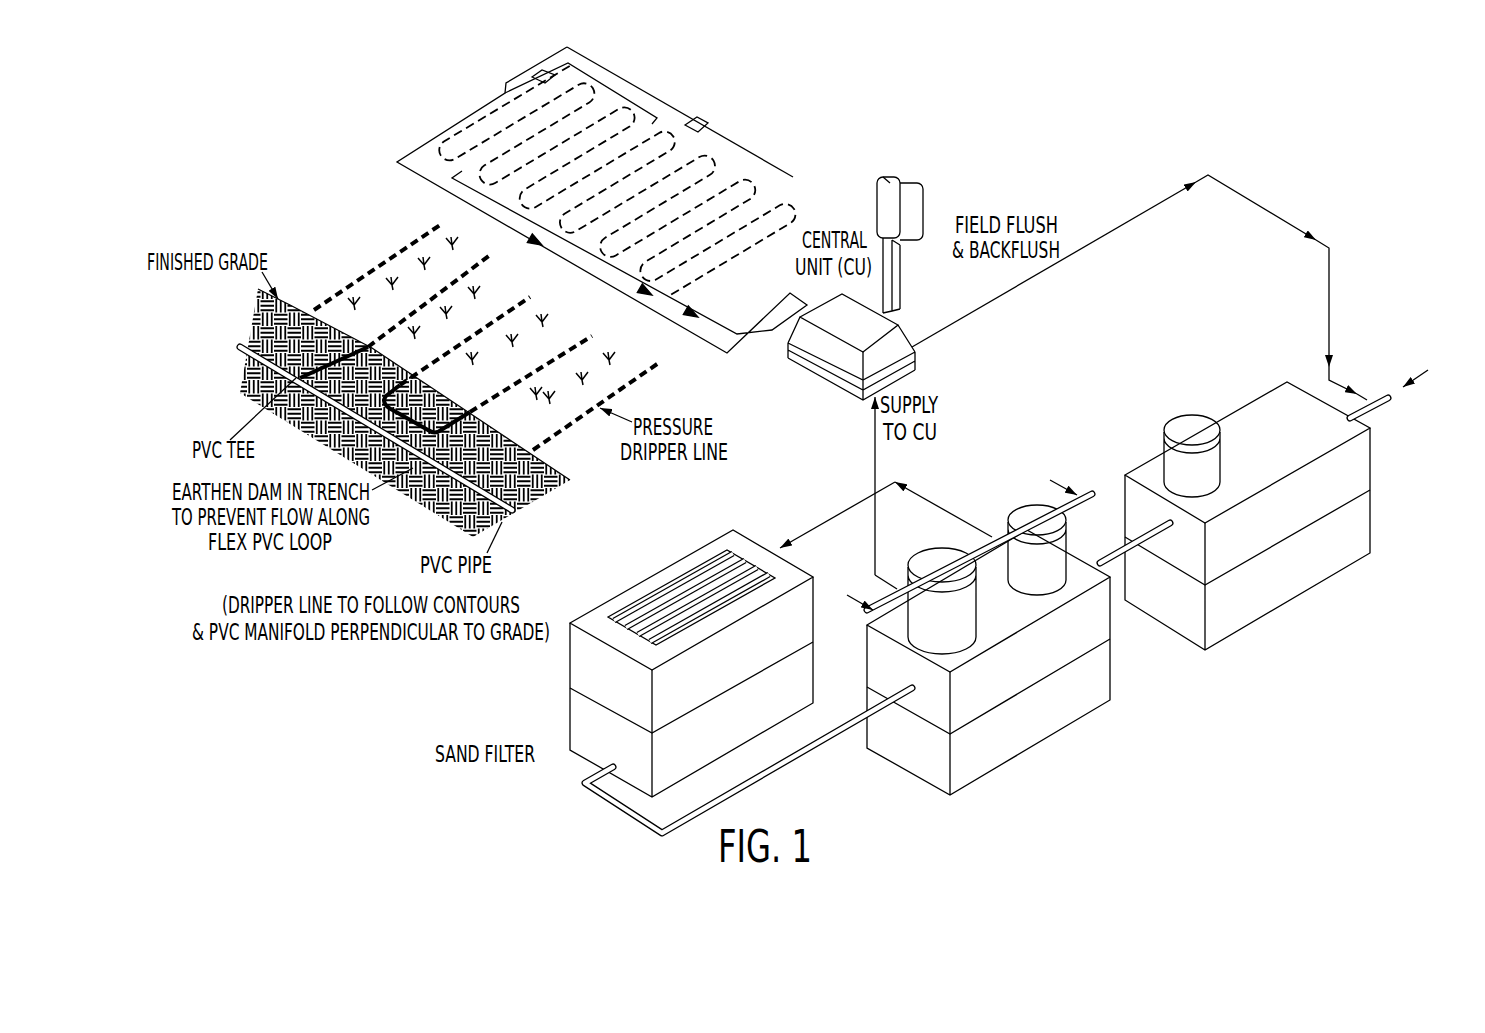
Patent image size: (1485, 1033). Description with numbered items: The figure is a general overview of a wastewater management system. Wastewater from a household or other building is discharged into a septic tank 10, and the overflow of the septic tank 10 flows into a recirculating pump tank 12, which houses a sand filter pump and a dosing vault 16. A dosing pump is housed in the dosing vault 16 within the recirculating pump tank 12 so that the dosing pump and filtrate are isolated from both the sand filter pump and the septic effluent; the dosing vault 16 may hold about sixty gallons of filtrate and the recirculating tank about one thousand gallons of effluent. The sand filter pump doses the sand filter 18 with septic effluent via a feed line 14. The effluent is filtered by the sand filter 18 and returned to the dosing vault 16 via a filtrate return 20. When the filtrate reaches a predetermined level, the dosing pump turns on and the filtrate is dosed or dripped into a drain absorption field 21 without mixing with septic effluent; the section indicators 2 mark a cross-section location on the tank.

The drain absorption field 21 is at (834, 98).
The septic tank 10 is at (1370, 524).
The recirculating pump tank 12 is at (1023, 647).
The feed line 14 is at (938, 504).
The dosing vault 16 is at (938, 548).
The sand filter 18 is at (803, 568).
The filtrate return 20 is at (855, 730).
The section line indicator 2 is at (955, 534).